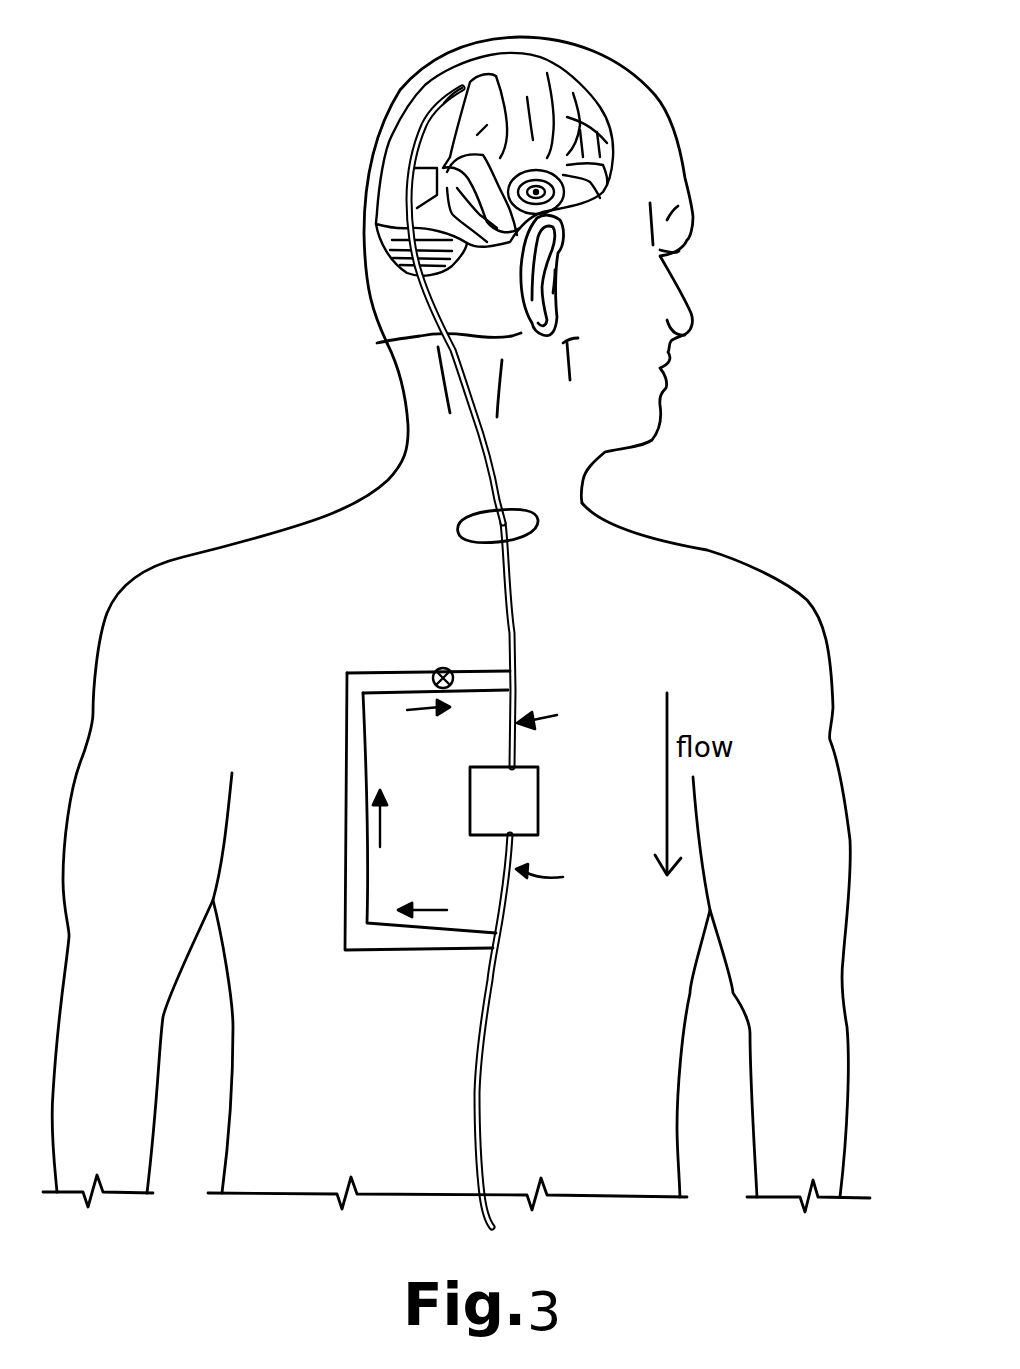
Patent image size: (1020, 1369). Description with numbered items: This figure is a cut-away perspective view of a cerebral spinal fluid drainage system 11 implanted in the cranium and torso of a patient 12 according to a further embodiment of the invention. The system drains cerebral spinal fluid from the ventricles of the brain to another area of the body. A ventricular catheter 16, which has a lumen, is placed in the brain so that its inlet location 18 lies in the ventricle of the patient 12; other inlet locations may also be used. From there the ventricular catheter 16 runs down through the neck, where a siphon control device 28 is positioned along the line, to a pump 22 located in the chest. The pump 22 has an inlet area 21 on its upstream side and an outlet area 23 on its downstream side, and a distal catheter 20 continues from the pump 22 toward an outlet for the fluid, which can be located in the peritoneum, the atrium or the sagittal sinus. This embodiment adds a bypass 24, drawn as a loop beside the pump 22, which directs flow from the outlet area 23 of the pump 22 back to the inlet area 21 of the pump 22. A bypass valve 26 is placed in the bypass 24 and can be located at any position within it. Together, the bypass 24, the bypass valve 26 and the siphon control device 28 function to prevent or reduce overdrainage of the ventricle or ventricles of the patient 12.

The fluid management system 11 is at (298, 309).
The patient 12 is at (707, 550).
The ventricular catheter 16 is at (427, 117).
The inlet location 18 is at (462, 84).
The distal catheter 20 is at (483, 1007).
The inlet area of the pump 21 is at (565, 717).
The pump 22 is at (540, 803).
The outlet area of the pump 23 is at (565, 880).
The bypass 24 is at (340, 765).
The bypass valve 26 is at (443, 667).
The siphon control device 28 is at (547, 540).